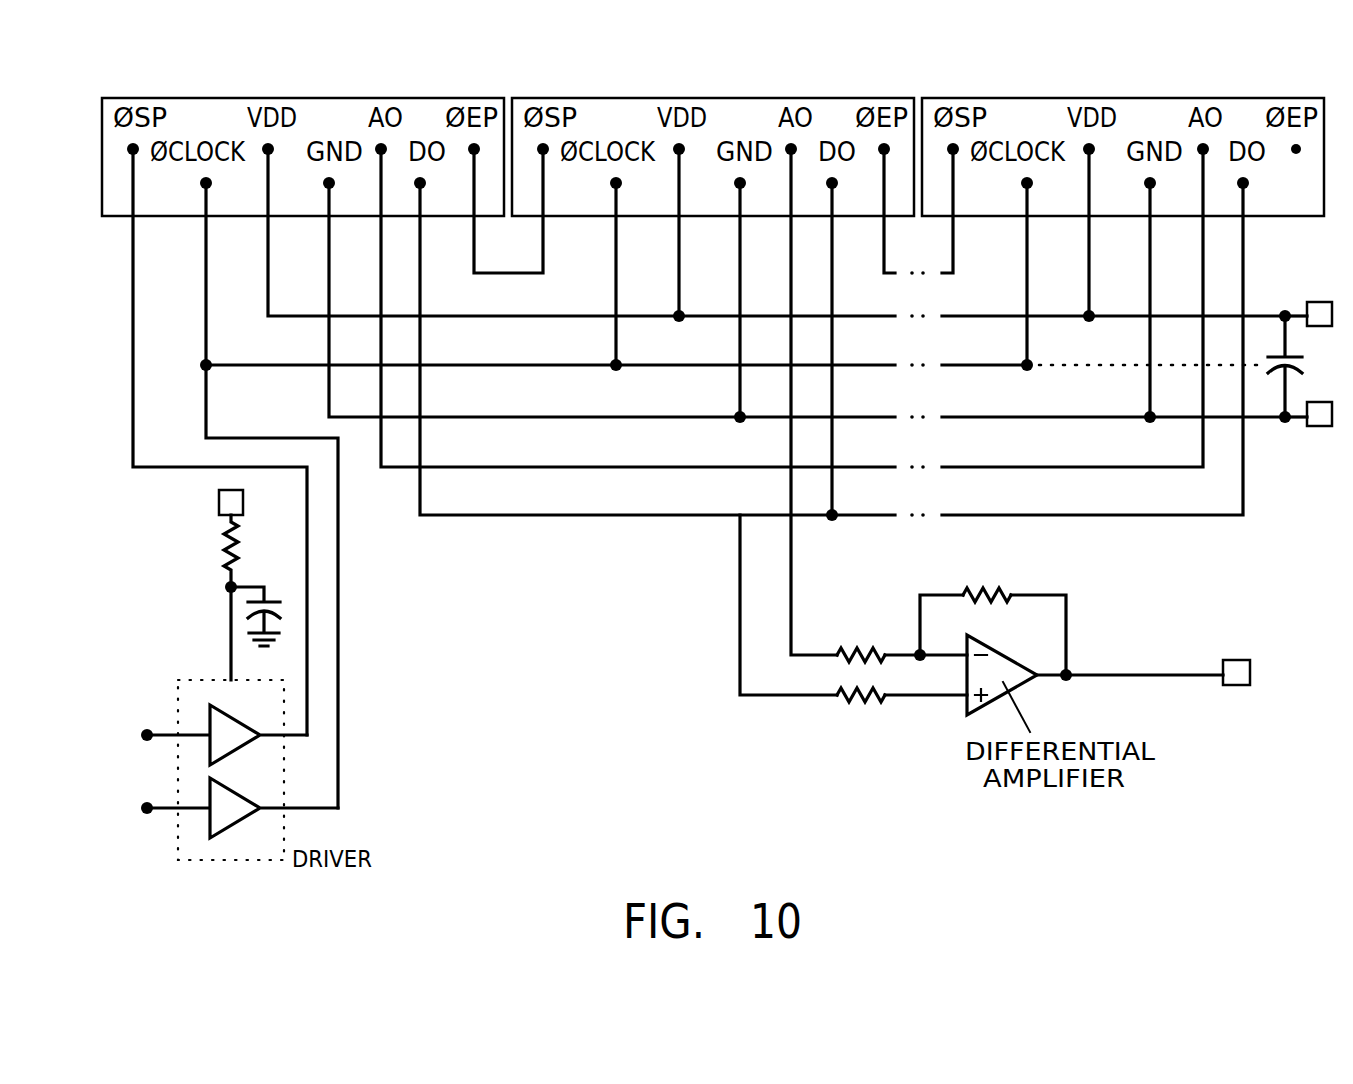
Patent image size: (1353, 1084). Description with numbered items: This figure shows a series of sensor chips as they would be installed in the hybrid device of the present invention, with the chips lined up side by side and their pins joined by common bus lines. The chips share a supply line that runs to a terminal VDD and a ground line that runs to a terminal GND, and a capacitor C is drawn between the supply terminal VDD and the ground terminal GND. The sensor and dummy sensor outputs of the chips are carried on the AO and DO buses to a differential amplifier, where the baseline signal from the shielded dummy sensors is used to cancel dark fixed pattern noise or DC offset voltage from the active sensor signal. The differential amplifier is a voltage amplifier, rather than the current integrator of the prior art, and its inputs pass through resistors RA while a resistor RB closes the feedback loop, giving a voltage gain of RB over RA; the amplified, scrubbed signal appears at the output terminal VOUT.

The capacitor C is at (1175, 366).
The input resistor RA is at (861, 673).
The feedback resistor RB is at (987, 576).
The supply voltage terminal VDD is at (782, 392).
The ground terminal GND is at (1316, 431).
The output terminal VOUT is at (1158, 689).